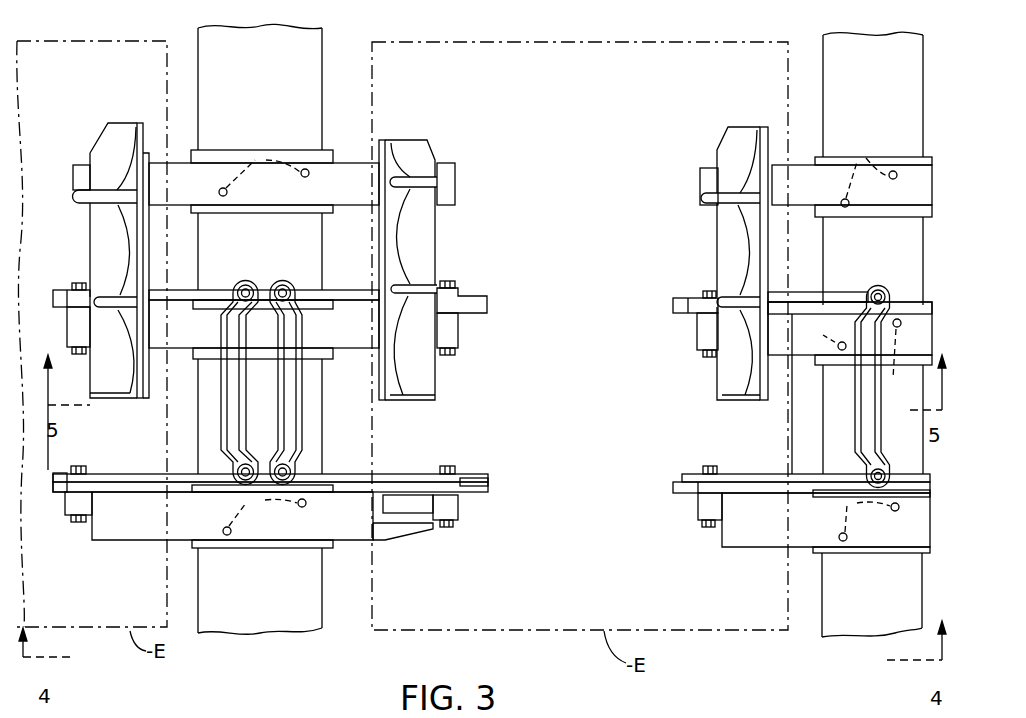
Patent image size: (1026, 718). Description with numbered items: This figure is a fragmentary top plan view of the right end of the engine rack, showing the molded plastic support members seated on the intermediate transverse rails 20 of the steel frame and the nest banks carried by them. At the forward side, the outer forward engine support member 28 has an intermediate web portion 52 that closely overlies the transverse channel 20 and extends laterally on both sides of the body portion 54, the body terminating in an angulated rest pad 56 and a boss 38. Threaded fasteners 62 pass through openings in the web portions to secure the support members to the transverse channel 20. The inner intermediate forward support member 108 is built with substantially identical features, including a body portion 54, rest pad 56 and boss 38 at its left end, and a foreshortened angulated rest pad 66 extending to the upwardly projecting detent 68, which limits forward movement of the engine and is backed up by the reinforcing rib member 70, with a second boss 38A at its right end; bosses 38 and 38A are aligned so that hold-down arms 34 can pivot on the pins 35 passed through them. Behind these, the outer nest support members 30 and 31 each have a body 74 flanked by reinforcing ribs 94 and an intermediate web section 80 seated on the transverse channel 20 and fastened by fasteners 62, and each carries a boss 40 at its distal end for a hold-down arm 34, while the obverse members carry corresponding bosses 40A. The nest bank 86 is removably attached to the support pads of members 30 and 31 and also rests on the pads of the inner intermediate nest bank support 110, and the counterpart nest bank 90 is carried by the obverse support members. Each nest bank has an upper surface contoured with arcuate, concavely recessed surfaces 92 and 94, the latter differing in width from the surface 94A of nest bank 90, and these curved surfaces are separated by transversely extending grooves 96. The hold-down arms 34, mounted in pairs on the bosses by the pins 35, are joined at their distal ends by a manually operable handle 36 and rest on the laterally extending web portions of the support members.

The intermediate transverse rail 20 is at (280, 612).
The outer forward engine support member 28 is at (757, 539).
The outer nest support member 30 is at (805, 352).
The outer nest support member 31 is at (799, 203).
The hold-down arm 34 is at (210, 288).
The pin 35 is at (82, 354).
The manually operable handle 36 is at (221, 322).
The boss 38 is at (64, 503).
The boss 38A is at (458, 508).
The boss 40 is at (80, 170).
The boss 40A is at (455, 180).
The intermediate web portion 52 is at (893, 490).
The body portion 54 is at (285, 532).
The angulated rest pad 56 is at (118, 518).
The threaded fastener 62 is at (563, 338).
The engine rest pad 66 is at (410, 505).
The detent 68 is at (412, 521).
The rib member 70 is at (385, 531).
The body 74 is at (353, 188).
The intermediate web section 80 is at (892, 157).
The nest bank 86 is at (89, 251).
The nest bank 90 is at (436, 236).
The concavely recessed surface 92 is at (97, 225).
The concavely recessed surface 94 is at (107, 135).
The concavely recessed surface 94A is at (414, 147).
The transverse groove 96 is at (98, 197).
The inner intermediate forward support member 108 is at (345, 535).
The inner intermediate nest bank support 110 is at (233, 161).